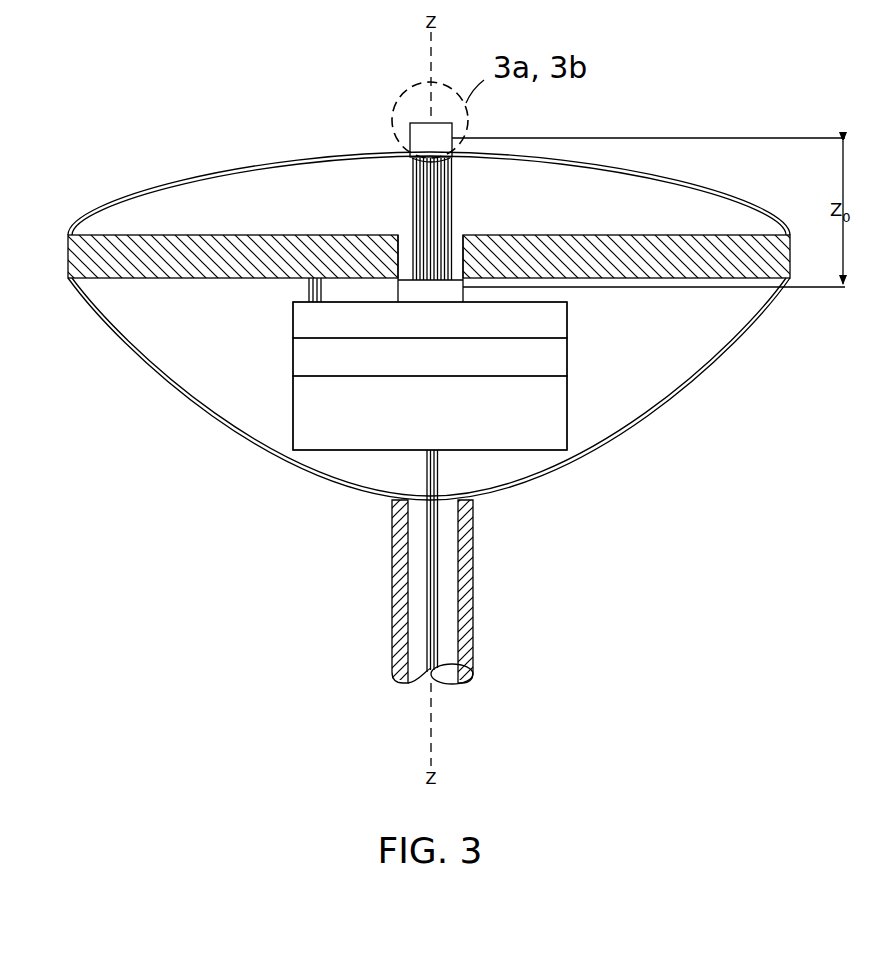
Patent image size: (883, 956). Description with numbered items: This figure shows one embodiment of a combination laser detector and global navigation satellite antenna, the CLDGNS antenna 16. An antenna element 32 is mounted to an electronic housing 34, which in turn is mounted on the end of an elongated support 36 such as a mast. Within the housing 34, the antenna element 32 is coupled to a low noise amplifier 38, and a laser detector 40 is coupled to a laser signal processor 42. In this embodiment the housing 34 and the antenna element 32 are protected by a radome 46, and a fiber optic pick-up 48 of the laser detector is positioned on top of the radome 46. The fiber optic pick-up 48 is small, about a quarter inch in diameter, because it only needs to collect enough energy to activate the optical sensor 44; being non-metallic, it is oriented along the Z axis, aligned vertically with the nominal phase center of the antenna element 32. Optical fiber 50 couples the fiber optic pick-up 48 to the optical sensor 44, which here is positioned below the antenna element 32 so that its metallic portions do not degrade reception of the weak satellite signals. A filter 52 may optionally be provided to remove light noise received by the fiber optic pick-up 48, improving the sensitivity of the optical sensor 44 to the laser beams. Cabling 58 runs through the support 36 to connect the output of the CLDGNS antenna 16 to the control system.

The CLDGNS antenna 16 is at (129, 170).
The antenna element 32 is at (655, 235).
The electronic housing 34 is at (572, 377).
The elongated support 36 is at (392, 560).
The low noise amplifier 38 is at (567, 325).
The laser detector 40 is at (384, 143).
The laser signal processor 42 is at (293, 360).
The optical sensor 44 is at (398, 292).
The radome 46 is at (218, 168).
The fiber optic pick-up 48 is at (410, 128).
The optical fiber 50 is at (412, 205).
The filter 52 is at (463, 262).
The cabling 58 is at (440, 542).